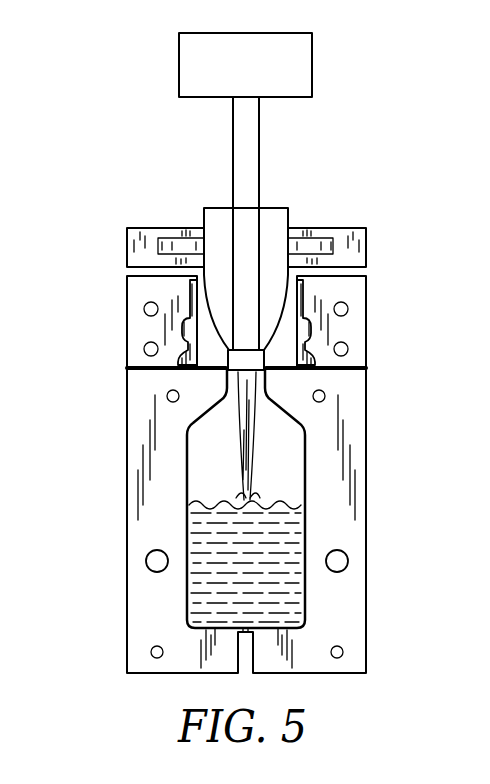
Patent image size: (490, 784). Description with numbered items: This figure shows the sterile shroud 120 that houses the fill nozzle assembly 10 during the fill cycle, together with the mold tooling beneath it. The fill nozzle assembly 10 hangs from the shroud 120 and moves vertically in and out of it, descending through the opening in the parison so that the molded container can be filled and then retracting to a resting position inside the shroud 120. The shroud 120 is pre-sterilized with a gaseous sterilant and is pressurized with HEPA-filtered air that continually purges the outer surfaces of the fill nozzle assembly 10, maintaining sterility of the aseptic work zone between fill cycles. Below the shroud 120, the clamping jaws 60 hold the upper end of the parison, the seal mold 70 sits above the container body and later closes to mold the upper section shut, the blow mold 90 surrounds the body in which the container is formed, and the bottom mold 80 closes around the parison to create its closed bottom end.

The sterile shroud 120 is at (312, 63).
The fill nozzle assembly 10 is at (259, 173).
The clamping jaws 60 is at (127, 245).
The seal mold 70 is at (127, 320).
The bottom mold 80 is at (245, 520).
The blow mold 90 is at (245, 474).